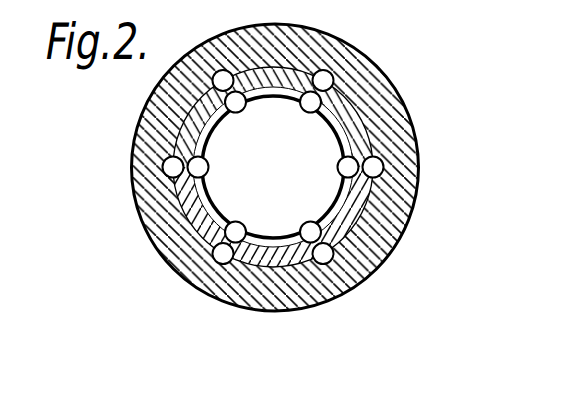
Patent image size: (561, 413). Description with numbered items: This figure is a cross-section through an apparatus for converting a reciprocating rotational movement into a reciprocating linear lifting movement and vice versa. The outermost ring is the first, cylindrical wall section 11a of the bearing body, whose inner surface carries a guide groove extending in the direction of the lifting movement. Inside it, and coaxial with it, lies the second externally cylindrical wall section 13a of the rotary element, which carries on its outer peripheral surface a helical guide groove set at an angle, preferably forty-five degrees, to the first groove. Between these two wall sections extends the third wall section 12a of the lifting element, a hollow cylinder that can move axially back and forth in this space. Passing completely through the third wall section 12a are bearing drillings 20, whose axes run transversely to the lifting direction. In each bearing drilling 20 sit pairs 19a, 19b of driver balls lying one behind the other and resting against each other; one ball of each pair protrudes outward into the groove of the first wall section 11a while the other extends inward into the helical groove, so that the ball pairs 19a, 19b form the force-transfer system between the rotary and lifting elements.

The first cylindrical wall section 11a is at (387, 115).
The third wall section 12a is at (352, 205).
The second externally cylindrical wall section 13a is at (387, 238).
The pair of driver balls 19a is at (163, 170).
The pair of driver balls 19b is at (385, 155).
The bearing drilling 20 is at (352, 148).